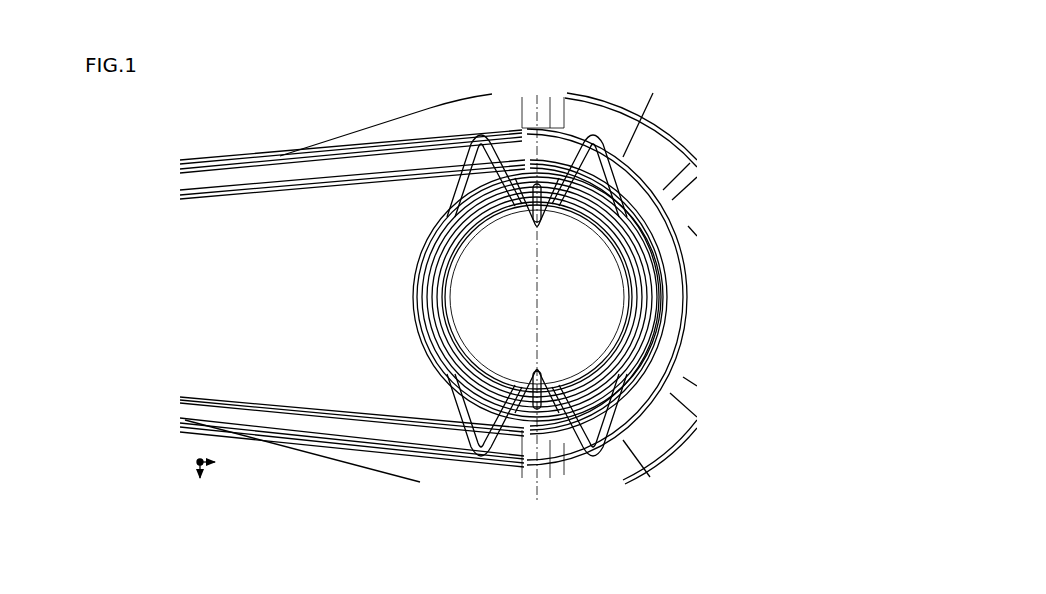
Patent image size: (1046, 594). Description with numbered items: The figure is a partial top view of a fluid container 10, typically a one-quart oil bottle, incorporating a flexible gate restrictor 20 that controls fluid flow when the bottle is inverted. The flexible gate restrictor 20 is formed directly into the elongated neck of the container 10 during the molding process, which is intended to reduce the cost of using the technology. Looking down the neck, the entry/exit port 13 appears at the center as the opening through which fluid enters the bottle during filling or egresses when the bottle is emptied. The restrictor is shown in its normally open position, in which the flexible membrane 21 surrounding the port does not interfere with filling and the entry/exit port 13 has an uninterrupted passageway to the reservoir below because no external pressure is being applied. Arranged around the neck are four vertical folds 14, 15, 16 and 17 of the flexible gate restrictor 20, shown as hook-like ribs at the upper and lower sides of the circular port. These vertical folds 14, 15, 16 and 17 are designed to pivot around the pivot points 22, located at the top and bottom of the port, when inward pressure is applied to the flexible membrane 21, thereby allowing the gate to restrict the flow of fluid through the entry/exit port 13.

The container 10 is at (150, 350).
The entry/exit port 13 is at (495, 302).
The vertical fold 14 is at (510, 157).
The vertical fold 15 is at (572, 166).
The vertical fold 16 is at (495, 440).
The vertical fold 17 is at (570, 440).
The flexible gate restrictor 20 is at (418, 180).
The flexible membrane 21 is at (400, 284).
The pivot points 22 is at (540, 222).